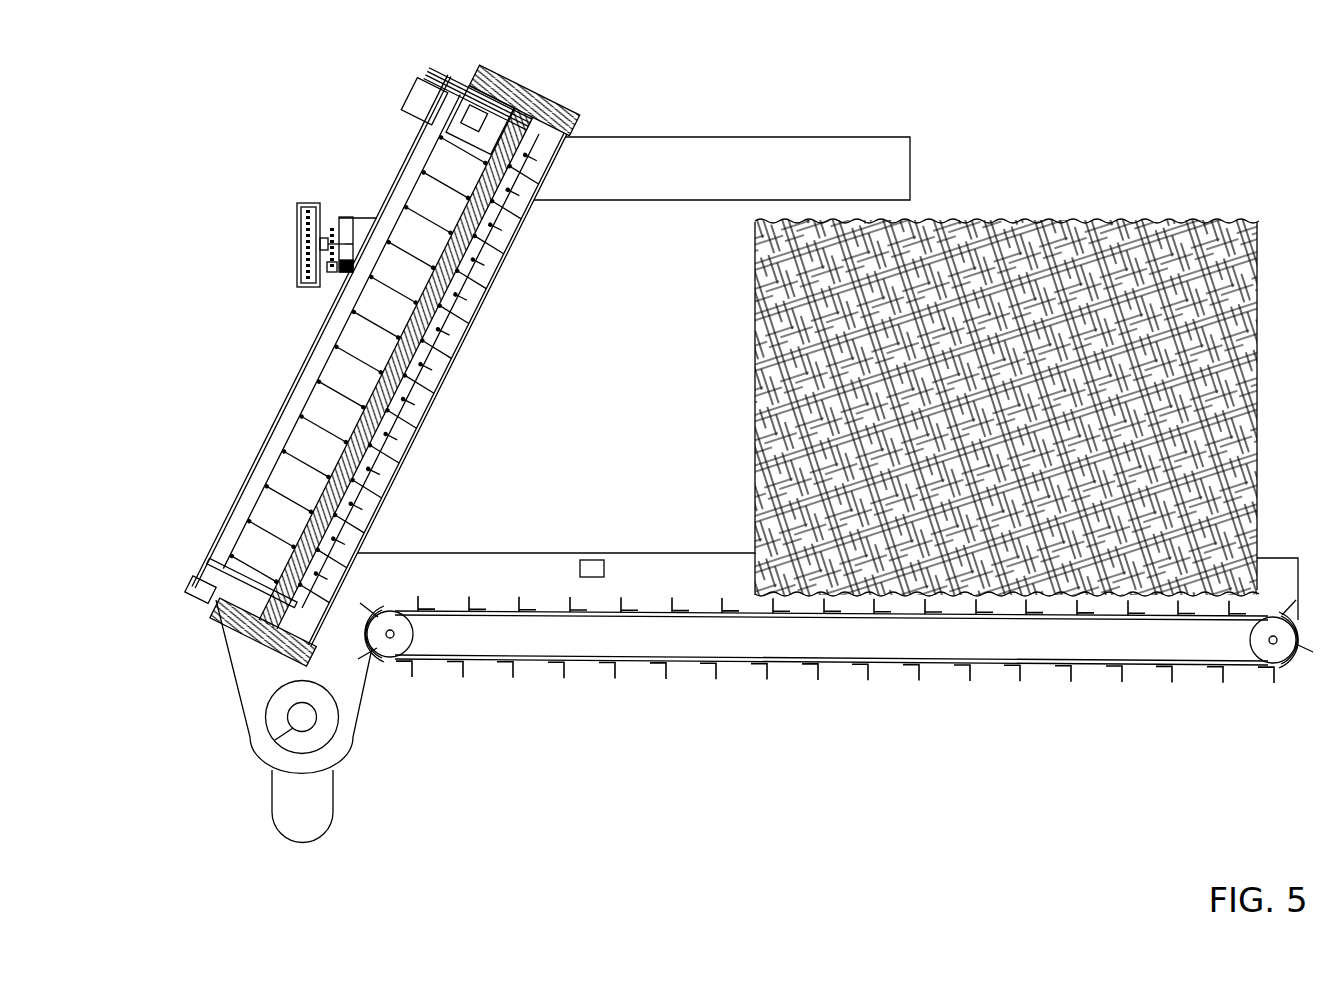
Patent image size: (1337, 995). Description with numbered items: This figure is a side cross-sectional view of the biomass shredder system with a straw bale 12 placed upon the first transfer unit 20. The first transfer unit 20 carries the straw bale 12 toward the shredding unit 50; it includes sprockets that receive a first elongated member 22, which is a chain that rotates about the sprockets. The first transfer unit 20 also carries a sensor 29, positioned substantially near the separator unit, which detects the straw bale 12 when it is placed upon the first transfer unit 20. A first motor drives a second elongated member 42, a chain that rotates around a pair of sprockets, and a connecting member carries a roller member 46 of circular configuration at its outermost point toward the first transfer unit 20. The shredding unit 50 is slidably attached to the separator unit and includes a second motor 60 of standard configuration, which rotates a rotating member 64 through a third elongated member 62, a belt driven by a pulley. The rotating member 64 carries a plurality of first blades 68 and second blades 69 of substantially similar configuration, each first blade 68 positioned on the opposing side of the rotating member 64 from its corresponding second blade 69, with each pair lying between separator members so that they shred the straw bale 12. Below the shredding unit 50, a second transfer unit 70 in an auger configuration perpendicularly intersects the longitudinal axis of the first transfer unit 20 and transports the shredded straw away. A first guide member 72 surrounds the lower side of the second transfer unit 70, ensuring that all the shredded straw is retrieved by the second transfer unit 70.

The straw bale 12 is at (1100, 235).
The first transfer unit 20 is at (1040, 672).
The first elongated member 22 is at (1285, 668).
The sensor 29 is at (594, 578).
The second elongated member 42 is at (300, 224).
The roller member 46 is at (352, 218).
The shredding unit 50 is at (248, 455).
The second motor 60 is at (415, 98).
The third elongated member 62 is at (475, 72).
The rotating member 64 is at (245, 532).
The first blades 68 is at (557, 163).
The second blades 69 is at (355, 352).
The second transfer unit 70 is at (338, 728).
The first guide member 72 is at (243, 707).